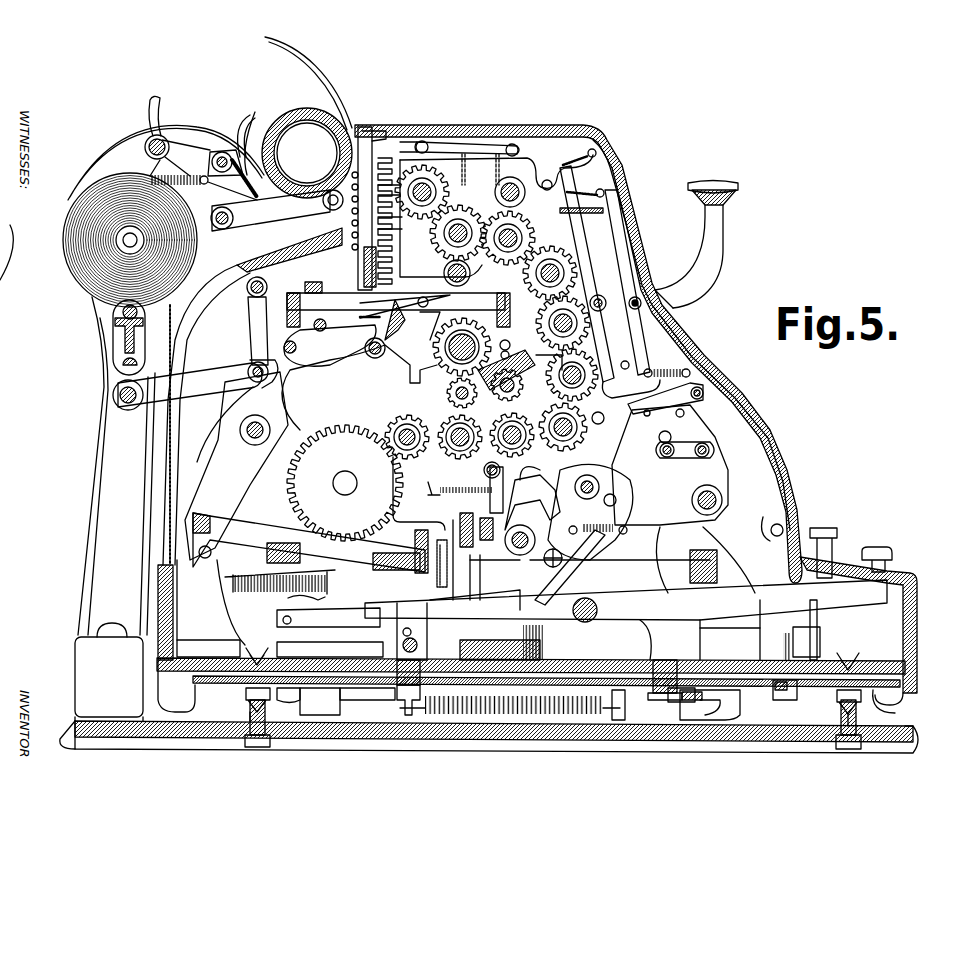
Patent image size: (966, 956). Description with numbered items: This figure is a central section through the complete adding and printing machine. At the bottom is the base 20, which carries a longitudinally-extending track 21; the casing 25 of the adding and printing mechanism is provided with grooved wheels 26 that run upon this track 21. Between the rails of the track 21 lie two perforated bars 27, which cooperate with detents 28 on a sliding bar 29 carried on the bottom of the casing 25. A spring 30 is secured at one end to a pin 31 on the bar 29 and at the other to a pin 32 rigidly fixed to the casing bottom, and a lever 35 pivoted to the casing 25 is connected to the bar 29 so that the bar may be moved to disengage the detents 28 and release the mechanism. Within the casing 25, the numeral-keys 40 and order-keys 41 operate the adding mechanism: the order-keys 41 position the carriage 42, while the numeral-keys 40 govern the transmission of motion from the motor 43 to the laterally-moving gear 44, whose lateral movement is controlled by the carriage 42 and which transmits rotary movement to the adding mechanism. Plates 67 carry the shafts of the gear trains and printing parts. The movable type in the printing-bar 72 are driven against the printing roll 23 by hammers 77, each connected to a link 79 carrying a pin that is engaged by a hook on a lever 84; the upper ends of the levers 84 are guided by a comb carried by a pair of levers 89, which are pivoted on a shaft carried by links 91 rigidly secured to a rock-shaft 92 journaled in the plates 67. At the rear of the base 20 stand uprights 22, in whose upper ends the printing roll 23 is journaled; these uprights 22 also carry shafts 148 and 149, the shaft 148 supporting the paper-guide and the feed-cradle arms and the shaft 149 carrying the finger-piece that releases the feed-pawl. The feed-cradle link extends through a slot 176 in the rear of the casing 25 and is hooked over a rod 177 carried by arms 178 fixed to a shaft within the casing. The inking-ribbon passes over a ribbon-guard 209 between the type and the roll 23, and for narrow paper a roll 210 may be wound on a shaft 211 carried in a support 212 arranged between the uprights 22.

The base 20 is at (532, 742).
The track 21 is at (847, 744).
The uprights 22 is at (115, 509).
The printing roll or platen 23 is at (302, 108).
The casing 25 is at (790, 451).
The grooved wheels or rollers 26 is at (843, 710).
The perforated bars 27 is at (680, 689).
The detents 28 is at (728, 690).
The sliding bar 29 is at (370, 688).
The spring 30 is at (573, 718).
The pin 31 is at (625, 705).
The pin 32 is at (427, 700).
The lever 35 is at (800, 698).
The numeral-keys 40 is at (875, 548).
The order-keys 41 is at (823, 529).
The carriage 42 is at (455, 518).
The motor 43 is at (290, 597).
The laterally-moving gear 44 is at (393, 425).
The plates 67 is at (697, 499).
The printing-bar 72 is at (373, 147).
The hammers 77 is at (470, 146).
The link 79 is at (530, 162).
The lever 84 is at (583, 242).
The levers 89 is at (602, 250).
The links 91 is at (673, 458).
The rock-shaft 92 is at (710, 451).
The shaft 148 is at (160, 146).
The shaft 149 is at (222, 152).
The slot 176 is at (195, 385).
The rod 177 is at (231, 466).
The arms 178 is at (252, 333).
The ribbon-guard 209 is at (333, 72).
The roll of narrow paper 210 is at (77, 243).
The shaft 211 is at (125, 245).
The support 212 is at (115, 323).